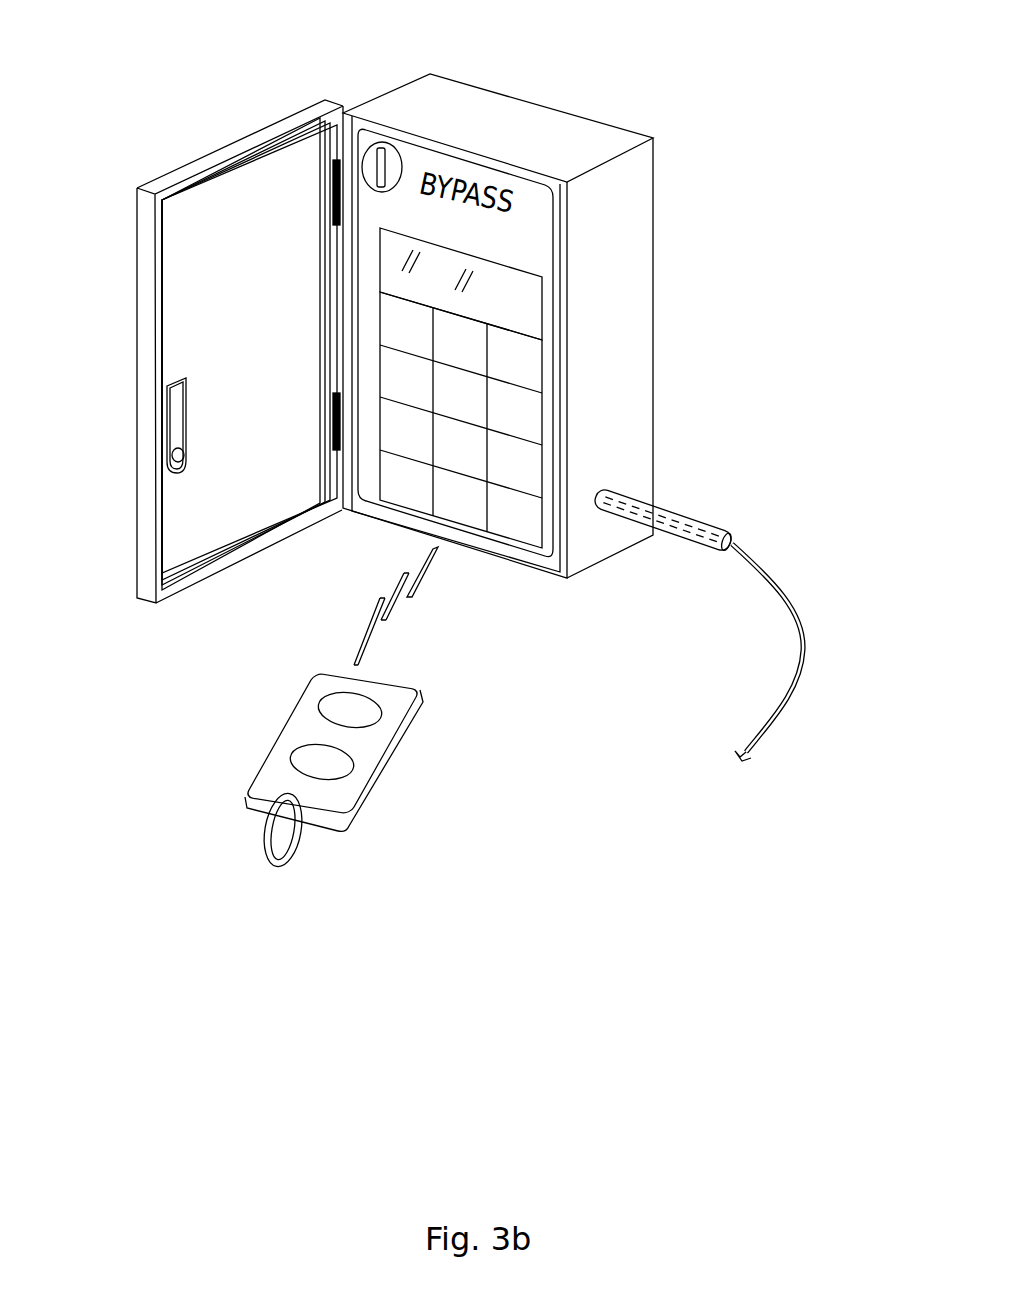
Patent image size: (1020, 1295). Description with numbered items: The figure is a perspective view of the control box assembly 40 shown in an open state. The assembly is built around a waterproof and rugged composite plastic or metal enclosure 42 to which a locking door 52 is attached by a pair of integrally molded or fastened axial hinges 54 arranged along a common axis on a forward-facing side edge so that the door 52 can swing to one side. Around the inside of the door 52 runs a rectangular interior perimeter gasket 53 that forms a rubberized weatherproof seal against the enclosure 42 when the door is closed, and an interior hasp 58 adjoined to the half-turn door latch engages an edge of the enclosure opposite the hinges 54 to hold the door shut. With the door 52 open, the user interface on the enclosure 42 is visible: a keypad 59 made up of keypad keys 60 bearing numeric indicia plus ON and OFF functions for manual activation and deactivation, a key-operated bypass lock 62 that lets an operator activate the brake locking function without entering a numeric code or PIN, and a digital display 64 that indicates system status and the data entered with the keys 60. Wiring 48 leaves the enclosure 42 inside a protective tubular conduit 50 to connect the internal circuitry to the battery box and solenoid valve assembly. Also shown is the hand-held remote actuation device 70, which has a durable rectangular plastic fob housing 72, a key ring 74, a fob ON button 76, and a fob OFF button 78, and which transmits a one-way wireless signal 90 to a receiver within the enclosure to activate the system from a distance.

The control box assembly 40 is at (82, 58).
The enclosure 42 is at (643, 237).
The wiring 48 is at (748, 556).
The protective tubular conduit 50 is at (650, 498).
The locking door 52 is at (175, 165).
The interior perimeter gasket 53 is at (308, 515).
The axial hinges 54 is at (338, 194).
The interior hasp 58 is at (172, 414).
The keypad 59 is at (545, 376).
The keypad keys 60 is at (530, 344).
The key-operated bypass lock 62 is at (393, 148).
The digital display 64 is at (520, 265).
The remote actuation device 70 is at (363, 758).
The fob housing 72 is at (357, 818).
The key ring 74 is at (265, 838).
The fob ON button 76 is at (323, 705).
The fob OFF button 78 is at (290, 760).
The wireless signal 90 is at (402, 611).